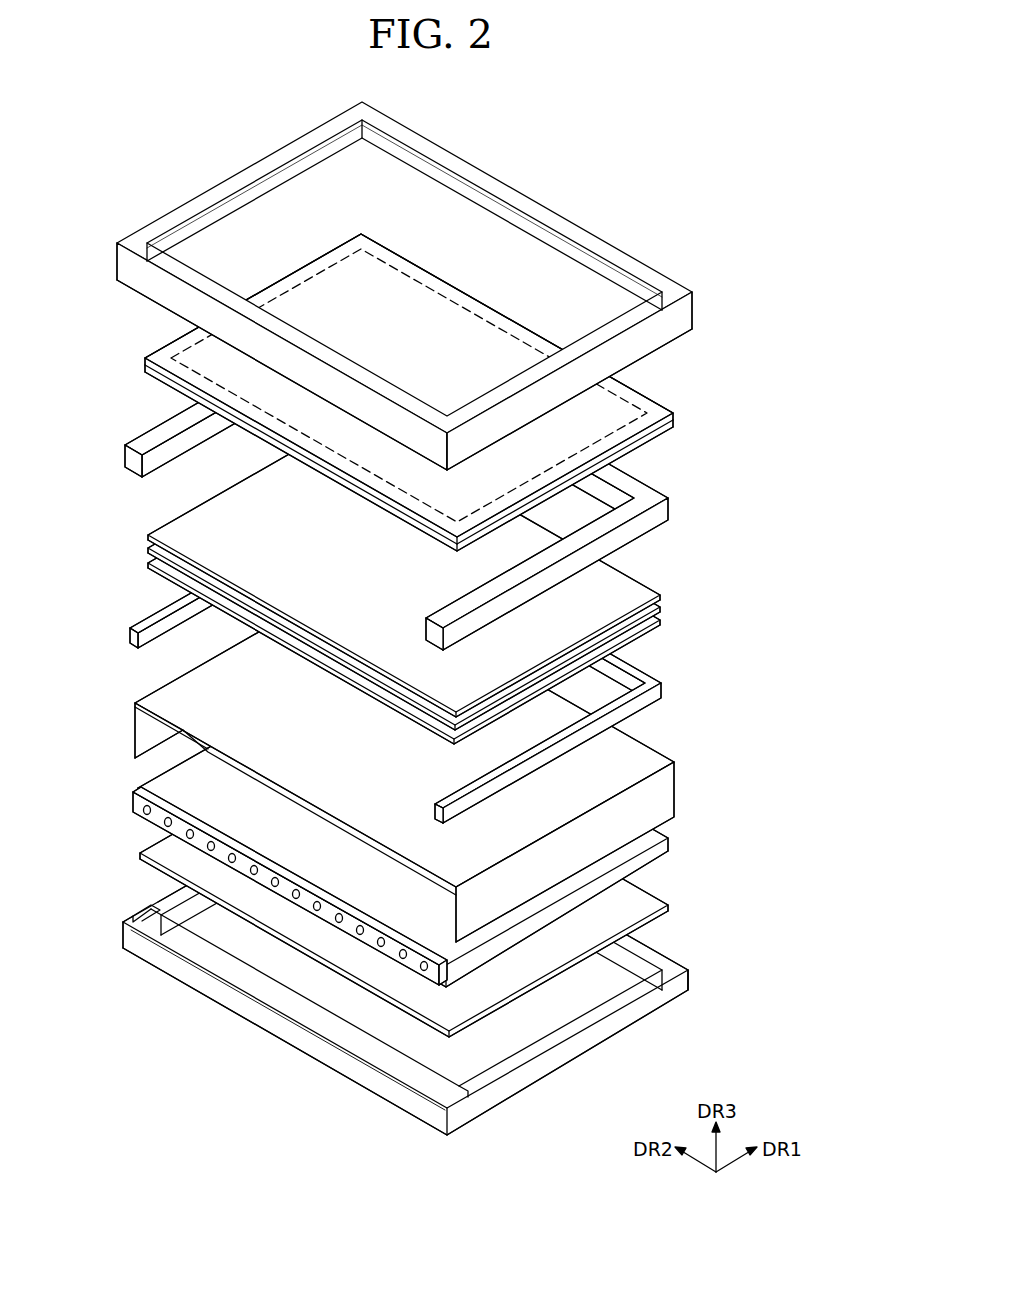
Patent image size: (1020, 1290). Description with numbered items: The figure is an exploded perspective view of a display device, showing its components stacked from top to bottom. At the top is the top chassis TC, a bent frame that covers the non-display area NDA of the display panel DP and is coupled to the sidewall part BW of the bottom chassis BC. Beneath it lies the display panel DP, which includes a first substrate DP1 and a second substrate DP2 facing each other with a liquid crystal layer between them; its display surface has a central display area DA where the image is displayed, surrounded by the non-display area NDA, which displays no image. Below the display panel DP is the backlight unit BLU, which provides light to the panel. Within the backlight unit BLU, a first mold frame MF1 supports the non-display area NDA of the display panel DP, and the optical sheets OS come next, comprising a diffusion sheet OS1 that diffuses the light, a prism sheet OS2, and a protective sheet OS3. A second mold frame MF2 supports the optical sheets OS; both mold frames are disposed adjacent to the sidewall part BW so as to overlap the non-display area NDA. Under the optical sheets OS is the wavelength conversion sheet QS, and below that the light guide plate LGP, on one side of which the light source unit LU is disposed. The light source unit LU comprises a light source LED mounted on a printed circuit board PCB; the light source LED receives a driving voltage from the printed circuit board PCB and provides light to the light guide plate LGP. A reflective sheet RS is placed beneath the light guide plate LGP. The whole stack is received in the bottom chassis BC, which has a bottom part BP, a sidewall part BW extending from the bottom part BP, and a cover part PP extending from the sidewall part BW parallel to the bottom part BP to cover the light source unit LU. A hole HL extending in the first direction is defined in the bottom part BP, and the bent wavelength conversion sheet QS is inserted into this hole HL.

The top chassis TC is at (693, 312).
The display panel DP is at (434, 392).
The first substrate DP1 is at (672, 428).
The second substrate DP2 is at (666, 405).
The display area DA is at (205, 352).
The non-display area NDA is at (160, 355).
The first mold frame MF1 is at (440, 482).
The optical sheets OS is at (471, 581).
The diffusion sheet OS1 is at (658, 626).
The prism sheet OS2 is at (656, 609).
The protective sheet OS3 is at (652, 588).
The second mold frame MF2 is at (664, 693).
The wavelength conversion sheet QS is at (668, 793).
The light guide plate LGP is at (660, 846).
The reflective sheet RS is at (658, 903).
The backlight unit BLU is at (436, 725).
The light source unit LU is at (236, 874).
The printed circuit board PCB is at (133, 793).
The light source LED is at (147, 812).
The hole HL is at (183, 917).
The bottom chassis BC is at (460, 959).
The bottom part BP is at (638, 990).
The sidewall part BW is at (678, 992).
The cover part PP is at (441, 1083).